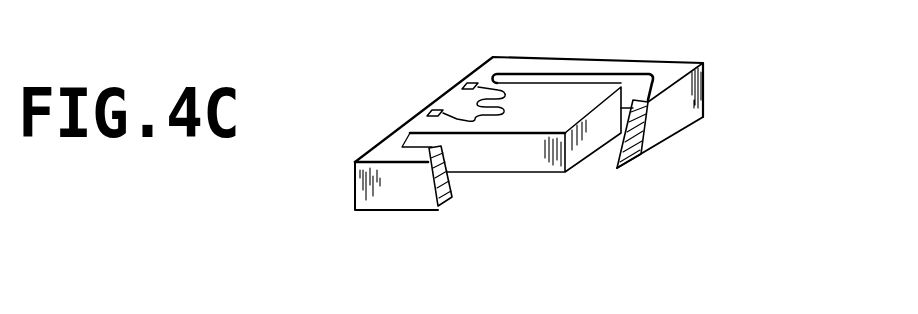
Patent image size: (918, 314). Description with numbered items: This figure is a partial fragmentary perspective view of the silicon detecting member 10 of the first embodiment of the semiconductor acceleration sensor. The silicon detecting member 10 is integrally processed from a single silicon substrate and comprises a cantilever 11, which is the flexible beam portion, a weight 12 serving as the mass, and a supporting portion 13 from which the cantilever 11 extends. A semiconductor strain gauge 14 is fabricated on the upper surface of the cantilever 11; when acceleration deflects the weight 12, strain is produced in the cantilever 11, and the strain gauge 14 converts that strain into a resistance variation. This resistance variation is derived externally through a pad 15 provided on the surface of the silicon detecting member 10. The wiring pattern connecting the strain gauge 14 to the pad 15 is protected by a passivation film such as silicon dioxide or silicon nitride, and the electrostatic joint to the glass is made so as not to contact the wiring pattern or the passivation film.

The silicon detecting member 10 is at (711, 88).
The cantilever 11 is at (430, 128).
The weight 12 is at (537, 160).
The supporting portion 13 is at (407, 190).
The semiconductor strain gauge 14 is at (512, 92).
The pad 15 is at (433, 109).